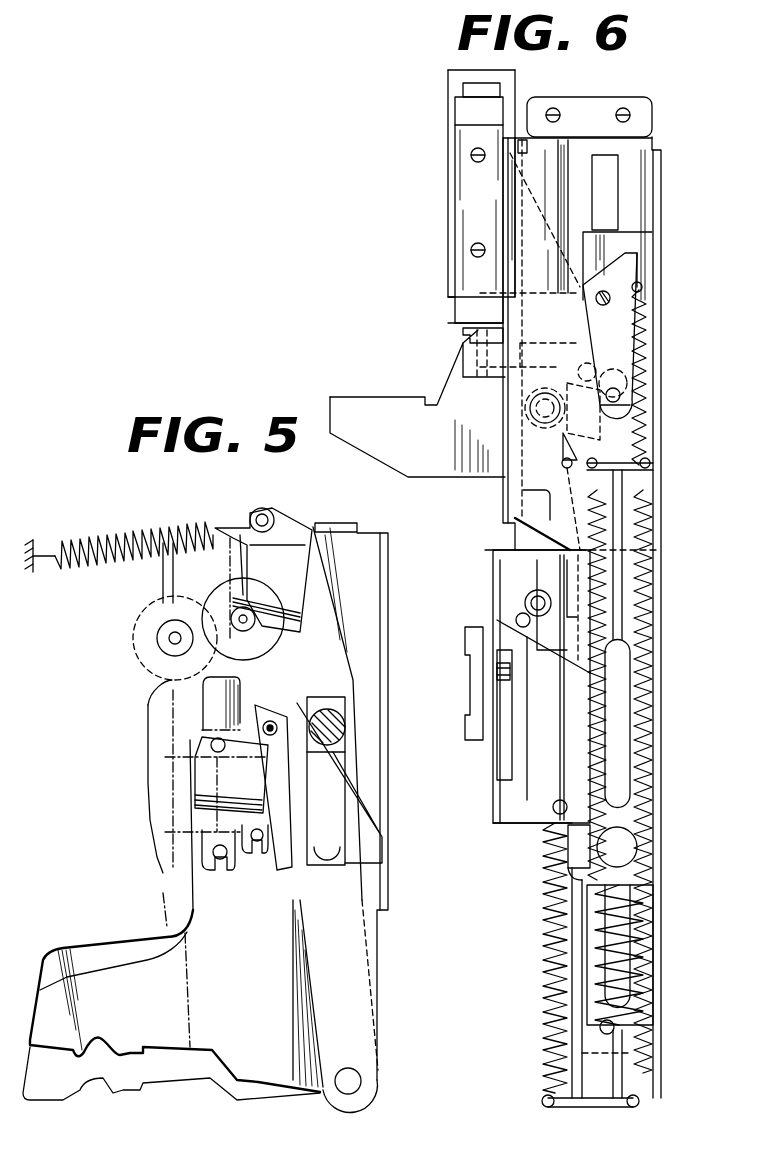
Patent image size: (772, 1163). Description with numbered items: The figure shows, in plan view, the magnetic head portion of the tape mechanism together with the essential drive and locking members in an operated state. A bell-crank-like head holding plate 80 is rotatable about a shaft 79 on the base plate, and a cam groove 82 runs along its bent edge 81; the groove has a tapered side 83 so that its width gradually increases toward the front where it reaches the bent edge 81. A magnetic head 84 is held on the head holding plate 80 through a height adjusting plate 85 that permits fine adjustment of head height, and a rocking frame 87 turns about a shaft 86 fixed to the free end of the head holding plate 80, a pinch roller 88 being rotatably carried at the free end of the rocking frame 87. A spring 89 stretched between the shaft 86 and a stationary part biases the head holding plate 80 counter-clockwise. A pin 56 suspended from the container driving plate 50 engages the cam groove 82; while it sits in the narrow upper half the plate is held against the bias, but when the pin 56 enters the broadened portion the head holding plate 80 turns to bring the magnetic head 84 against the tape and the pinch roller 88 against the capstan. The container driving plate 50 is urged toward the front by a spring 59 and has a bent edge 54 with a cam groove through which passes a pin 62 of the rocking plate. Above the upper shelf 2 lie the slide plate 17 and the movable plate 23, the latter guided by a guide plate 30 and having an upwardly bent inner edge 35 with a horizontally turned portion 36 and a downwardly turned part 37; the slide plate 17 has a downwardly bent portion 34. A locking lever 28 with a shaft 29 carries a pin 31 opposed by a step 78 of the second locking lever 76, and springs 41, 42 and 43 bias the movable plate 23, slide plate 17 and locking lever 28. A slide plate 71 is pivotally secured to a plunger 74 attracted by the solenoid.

In FIG. 6, the upper shelf 2 is at (652, 162).
In FIG. 6, the slide plate 17 is at (635, 234).
In FIG. 6, the movable plate 23 is at (520, 519).
In FIG. 6, the locking lever 28 is at (642, 265).
In FIG. 6, the shaft 29 is at (598, 295).
In FIG. 6, the guide plate 30 is at (457, 192).
In FIG. 6, the pin 31 is at (622, 402).
In FIG. 6, the downwardly bent portion 34 is at (566, 835).
In FIG. 6, the inner edge 35 is at (504, 512).
In FIG. 6, the turned portion 36 is at (419, 478).
In FIG. 6, the downwardly turned part 37 is at (393, 397).
In FIG. 6, the spring 41 is at (648, 1035).
In FIG. 6, the strong spring 42 is at (607, 933).
In FIG. 6, the weak spring 43 is at (648, 330).
In FIG. 6, the container driving plate 50 is at (505, 818).
In FIG. 6, the bent edge 54 is at (494, 584).
In FIG. 5, the pin 56 is at (345, 722).
In FIG. 6, the spring 59 is at (548, 906).
In FIG. 6, the pin 62 is at (503, 680).
In FIG. 6, the slide plate 71 is at (452, 96).
In FIG. 6, the plunger 74 is at (468, 334).
In FIG. 6, the second locking lever 76 is at (546, 346).
In FIG. 6, the step 78 is at (620, 393).
In FIG. 5, the shaft 79 is at (362, 1081).
In FIG. 5, the head holding plate 80 is at (378, 993).
In FIG. 5, the bent edge 81 is at (387, 567).
In FIG. 5, the cam groove 82 is at (333, 788).
In FIG. 5, the tapered side 83 is at (377, 814).
In FIG. 5, the magnetic head 84 is at (195, 778).
In FIG. 5, the height adjusting plate 85 is at (268, 724).
In FIG. 5, the shaft 86 is at (256, 512).
In FIG. 5, the rocking frame 87 is at (287, 557).
In FIG. 5, the pinch roller 88 is at (262, 648).
In FIG. 5, the spring 89 is at (107, 534).